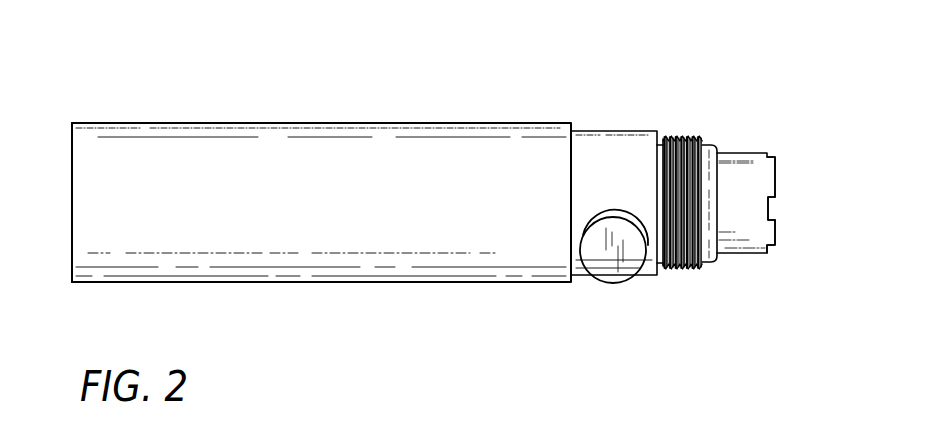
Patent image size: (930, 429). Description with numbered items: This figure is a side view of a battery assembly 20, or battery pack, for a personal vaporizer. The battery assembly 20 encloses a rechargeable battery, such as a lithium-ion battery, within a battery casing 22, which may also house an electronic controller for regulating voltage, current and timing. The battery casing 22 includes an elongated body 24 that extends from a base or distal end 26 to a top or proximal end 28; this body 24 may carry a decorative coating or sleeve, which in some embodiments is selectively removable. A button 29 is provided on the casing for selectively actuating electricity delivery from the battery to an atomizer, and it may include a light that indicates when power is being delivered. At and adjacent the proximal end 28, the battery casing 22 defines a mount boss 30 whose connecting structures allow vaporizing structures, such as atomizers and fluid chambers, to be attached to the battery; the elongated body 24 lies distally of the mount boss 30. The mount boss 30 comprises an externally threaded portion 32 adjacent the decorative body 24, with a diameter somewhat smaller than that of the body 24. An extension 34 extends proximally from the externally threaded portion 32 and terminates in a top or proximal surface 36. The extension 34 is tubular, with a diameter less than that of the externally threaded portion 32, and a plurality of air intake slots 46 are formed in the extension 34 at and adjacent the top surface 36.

The battery assembly 20 is at (408, 44).
The battery casing 22 is at (325, 294).
The elongated body 24 is at (280, 157).
The distal end 26 is at (62, 254).
The proximal end 28 is at (776, 249).
The button 29 is at (606, 273).
The mount boss 30 is at (708, 103).
The externally threaded portion 32 is at (692, 266).
The extension 34 is at (743, 172).
The proximal surface 36 is at (777, 175).
The air intake slots 46 is at (769, 208).